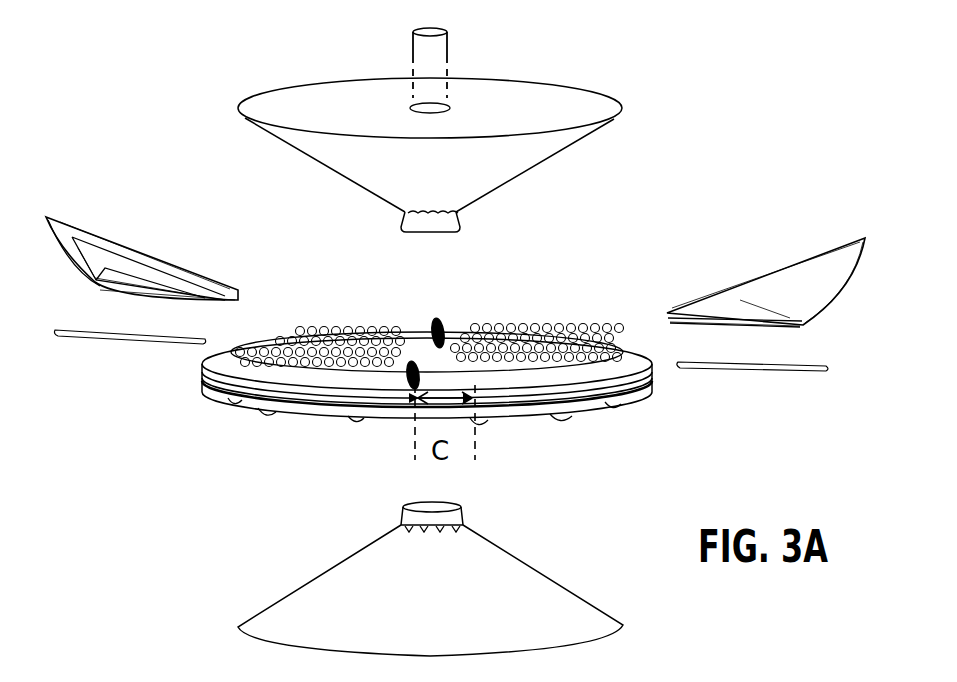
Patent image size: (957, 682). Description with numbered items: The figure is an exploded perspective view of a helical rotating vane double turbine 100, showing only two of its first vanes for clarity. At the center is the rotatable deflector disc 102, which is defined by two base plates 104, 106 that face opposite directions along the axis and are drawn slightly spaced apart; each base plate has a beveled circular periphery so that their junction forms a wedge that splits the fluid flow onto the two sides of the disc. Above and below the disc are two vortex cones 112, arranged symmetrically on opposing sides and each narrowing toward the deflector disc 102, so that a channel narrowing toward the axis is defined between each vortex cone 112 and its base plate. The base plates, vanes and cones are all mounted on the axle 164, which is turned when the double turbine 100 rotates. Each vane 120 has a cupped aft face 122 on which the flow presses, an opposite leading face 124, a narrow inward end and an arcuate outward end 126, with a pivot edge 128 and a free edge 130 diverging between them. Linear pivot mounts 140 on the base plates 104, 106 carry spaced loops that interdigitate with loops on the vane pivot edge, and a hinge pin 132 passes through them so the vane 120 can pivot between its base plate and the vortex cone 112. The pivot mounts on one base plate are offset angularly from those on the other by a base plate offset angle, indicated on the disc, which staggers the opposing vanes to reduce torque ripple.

The double turbine 100 is at (225, 130).
The deflector disc 102 is at (225, 428).
The base plate 104 is at (415, 338).
The base plate 106 is at (333, 425).
The vortex cone 112 is at (505, 158).
The vane 120 is at (65, 200).
The cupped aft face 122 is at (110, 263).
The leading face 124 is at (756, 325).
The arcuate outward end 126 is at (835, 290).
The pivot edge 128 is at (125, 300).
The free edge 130 is at (100, 245).
The hinge pin 132 is at (115, 343).
The pivot mount 140 is at (318, 308).
The axle 164 is at (448, 52).